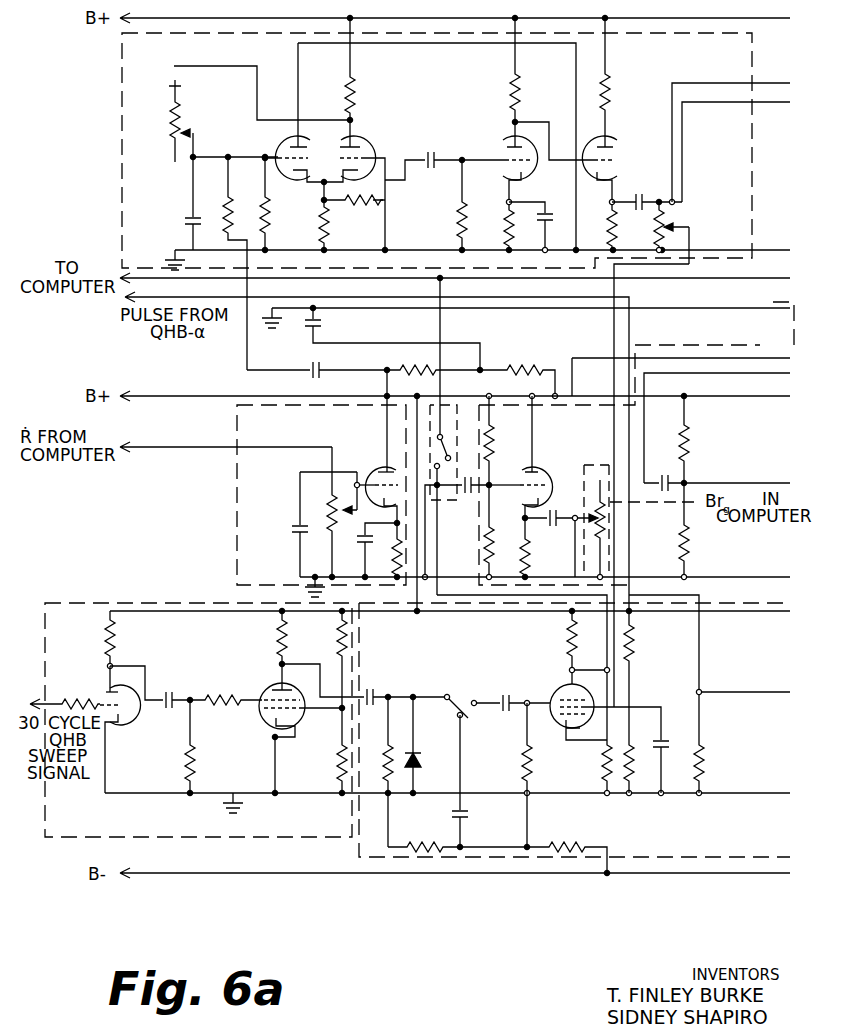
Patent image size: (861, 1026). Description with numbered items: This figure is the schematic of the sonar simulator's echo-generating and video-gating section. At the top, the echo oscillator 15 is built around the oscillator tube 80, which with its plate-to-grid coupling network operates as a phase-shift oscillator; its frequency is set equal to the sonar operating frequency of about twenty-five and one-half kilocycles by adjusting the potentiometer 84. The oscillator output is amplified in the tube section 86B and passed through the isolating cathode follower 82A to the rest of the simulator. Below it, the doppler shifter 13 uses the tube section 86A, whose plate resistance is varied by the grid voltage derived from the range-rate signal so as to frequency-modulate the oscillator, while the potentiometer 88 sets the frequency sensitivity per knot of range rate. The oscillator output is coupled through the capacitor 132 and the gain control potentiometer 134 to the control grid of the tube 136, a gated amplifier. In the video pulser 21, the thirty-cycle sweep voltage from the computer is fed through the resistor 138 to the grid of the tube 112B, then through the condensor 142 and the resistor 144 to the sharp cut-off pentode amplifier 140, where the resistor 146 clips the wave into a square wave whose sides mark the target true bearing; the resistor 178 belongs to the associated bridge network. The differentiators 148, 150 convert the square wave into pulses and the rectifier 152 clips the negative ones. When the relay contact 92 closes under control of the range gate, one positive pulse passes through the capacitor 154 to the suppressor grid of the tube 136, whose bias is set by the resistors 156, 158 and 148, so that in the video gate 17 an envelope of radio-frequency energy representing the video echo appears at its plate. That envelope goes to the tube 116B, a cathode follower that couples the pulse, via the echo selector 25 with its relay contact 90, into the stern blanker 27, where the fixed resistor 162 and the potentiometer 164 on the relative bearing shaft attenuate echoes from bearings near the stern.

The center frequency oscillator 15 is at (122, 115).
The potentiometer 84 is at (170, 134).
The vacuum tube 80 is at (378, 136).
The vacuum tube section 86B is at (506, 142).
The cathode follower 82A is at (615, 148).
The capacitor 132 is at (638, 196).
The gain control potentiometer 134 is at (670, 212).
The echo selector circuit 25 is at (430, 403).
The relay contact 90 is at (442, 434).
The stern blanking circuit 27 is at (640, 345).
The doppler shifter 13 is at (237, 499).
The potentiometer 88 is at (320, 510).
The vacuum tube section 86A is at (376, 467).
The vacuum tube 116B is at (536, 468).
The potentiometer 164 is at (590, 522).
The fixed resistor 162 is at (598, 552).
The video pulser 21 is at (107, 838).
The video bearing gate 17 is at (630, 857).
The resistor 178 is at (107, 634).
The condensor 142 is at (168, 692).
The resistor 146 is at (224, 708).
The resistor 144 is at (195, 775).
The vacuum tube 112B is at (113, 725).
The resistor 138 is at (63, 700).
The sharp cut-off pentode amplifier 140 is at (270, 690).
The resistor-capacitor differentiator 150 is at (370, 692).
The resistor-capacitor differentiator 148 is at (387, 752).
The rectifier 152 is at (418, 758).
The relay contact 92 is at (455, 695).
The capacitor 154 is at (506, 694).
The vacuum tube 136 is at (548, 716).
The resistor 158 is at (410, 840).
The resistor 156 is at (553, 843).